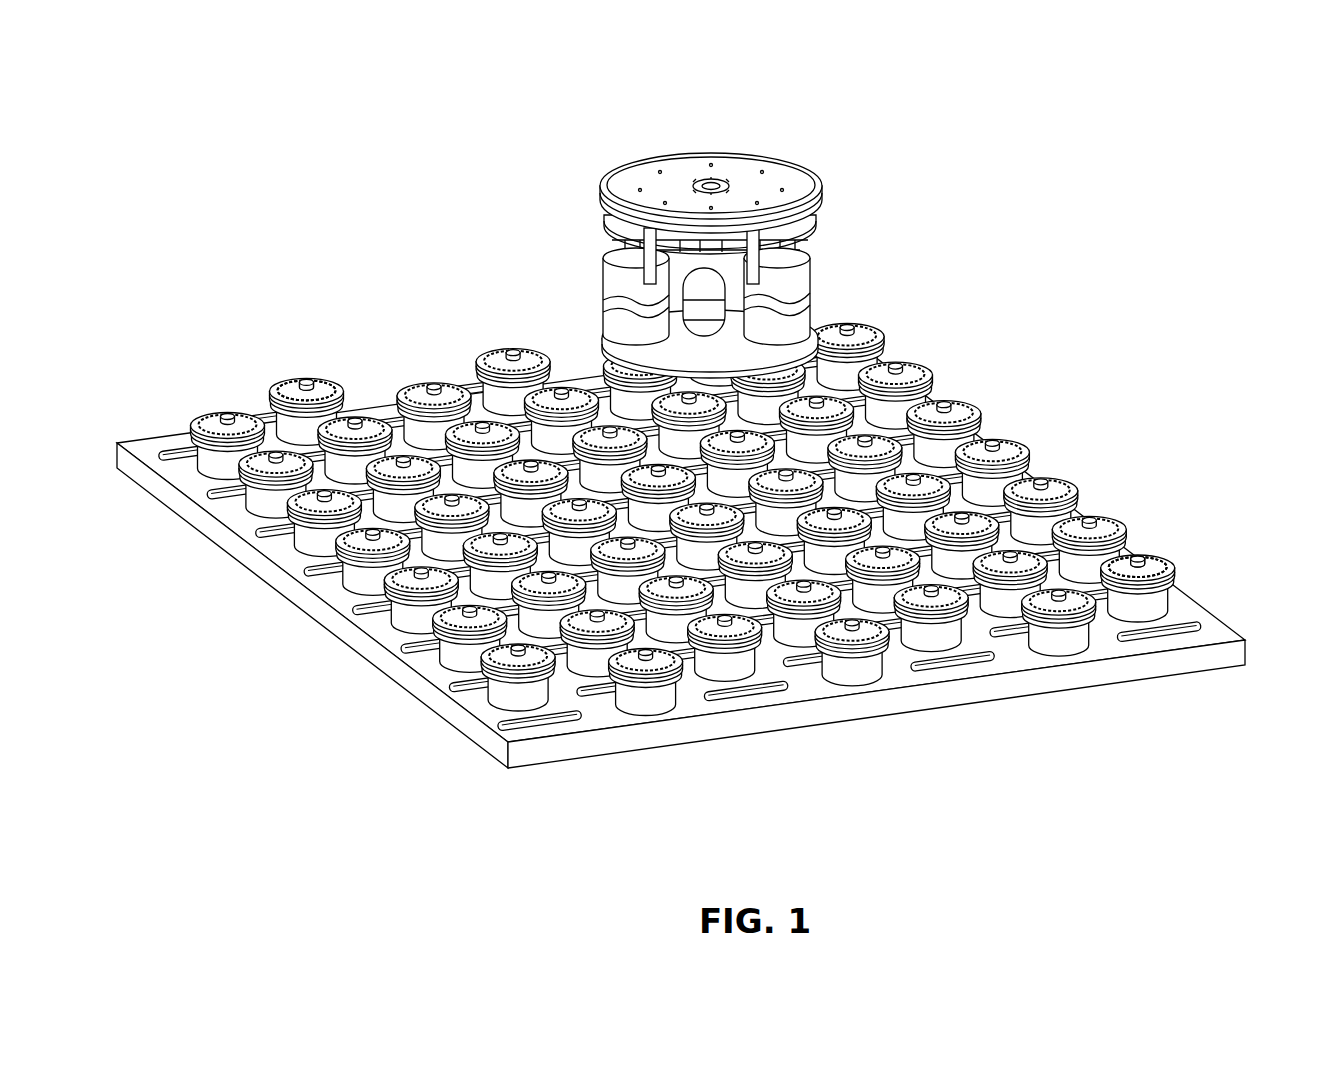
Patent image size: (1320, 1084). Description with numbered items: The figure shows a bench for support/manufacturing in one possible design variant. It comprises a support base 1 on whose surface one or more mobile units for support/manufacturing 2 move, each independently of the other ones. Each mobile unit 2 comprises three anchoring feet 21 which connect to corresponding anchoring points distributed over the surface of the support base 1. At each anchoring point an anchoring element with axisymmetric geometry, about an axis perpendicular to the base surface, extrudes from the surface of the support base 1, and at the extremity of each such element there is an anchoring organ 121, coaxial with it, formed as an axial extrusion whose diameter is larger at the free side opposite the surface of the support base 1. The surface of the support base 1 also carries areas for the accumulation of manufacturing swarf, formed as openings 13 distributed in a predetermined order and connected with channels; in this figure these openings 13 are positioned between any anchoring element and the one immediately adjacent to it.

The support base 1 is at (1220, 690).
The anchoring organ 121 is at (310, 378).
The opening 13 is at (180, 445).
The mobile unit for support/manufacturing 2 is at (764, 228).
The anchoring foot 21 is at (806, 300).